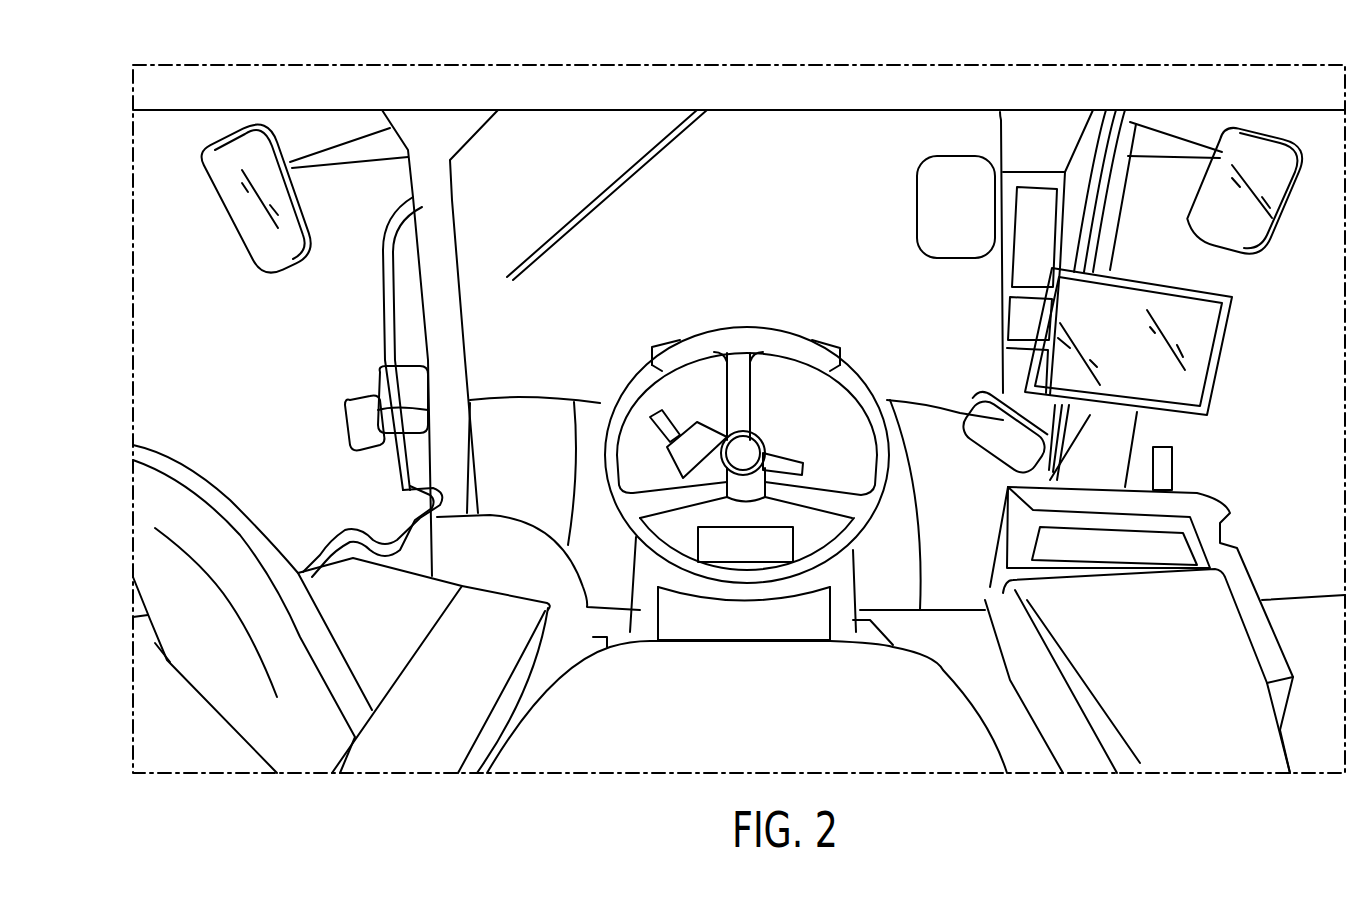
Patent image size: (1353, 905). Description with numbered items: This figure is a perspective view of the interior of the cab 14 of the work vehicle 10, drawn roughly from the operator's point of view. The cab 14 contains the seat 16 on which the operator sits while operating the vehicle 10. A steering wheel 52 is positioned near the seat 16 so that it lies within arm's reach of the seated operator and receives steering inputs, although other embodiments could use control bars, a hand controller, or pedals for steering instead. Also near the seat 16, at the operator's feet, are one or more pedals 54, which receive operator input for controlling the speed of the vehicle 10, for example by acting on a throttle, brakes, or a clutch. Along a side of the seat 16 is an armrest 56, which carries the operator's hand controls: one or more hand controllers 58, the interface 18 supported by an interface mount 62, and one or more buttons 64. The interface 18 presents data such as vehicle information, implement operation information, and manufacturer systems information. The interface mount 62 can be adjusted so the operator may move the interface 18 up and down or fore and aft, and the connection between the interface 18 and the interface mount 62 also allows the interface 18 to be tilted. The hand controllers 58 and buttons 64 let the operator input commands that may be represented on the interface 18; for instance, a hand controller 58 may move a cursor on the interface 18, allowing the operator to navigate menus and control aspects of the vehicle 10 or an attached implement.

The work vehicle 10 is at (966, 52).
The cab 14 is at (112, 245).
The seat 16 is at (632, 738).
The interface 18 is at (1200, 330).
The steering wheel 52 is at (633, 387).
The pedals 54 is at (897, 634).
The armrest 56 is at (1243, 531).
The hand controllers 58 is at (983, 397).
The interface mount 62 is at (1110, 438).
The buttons 64 is at (1147, 545).